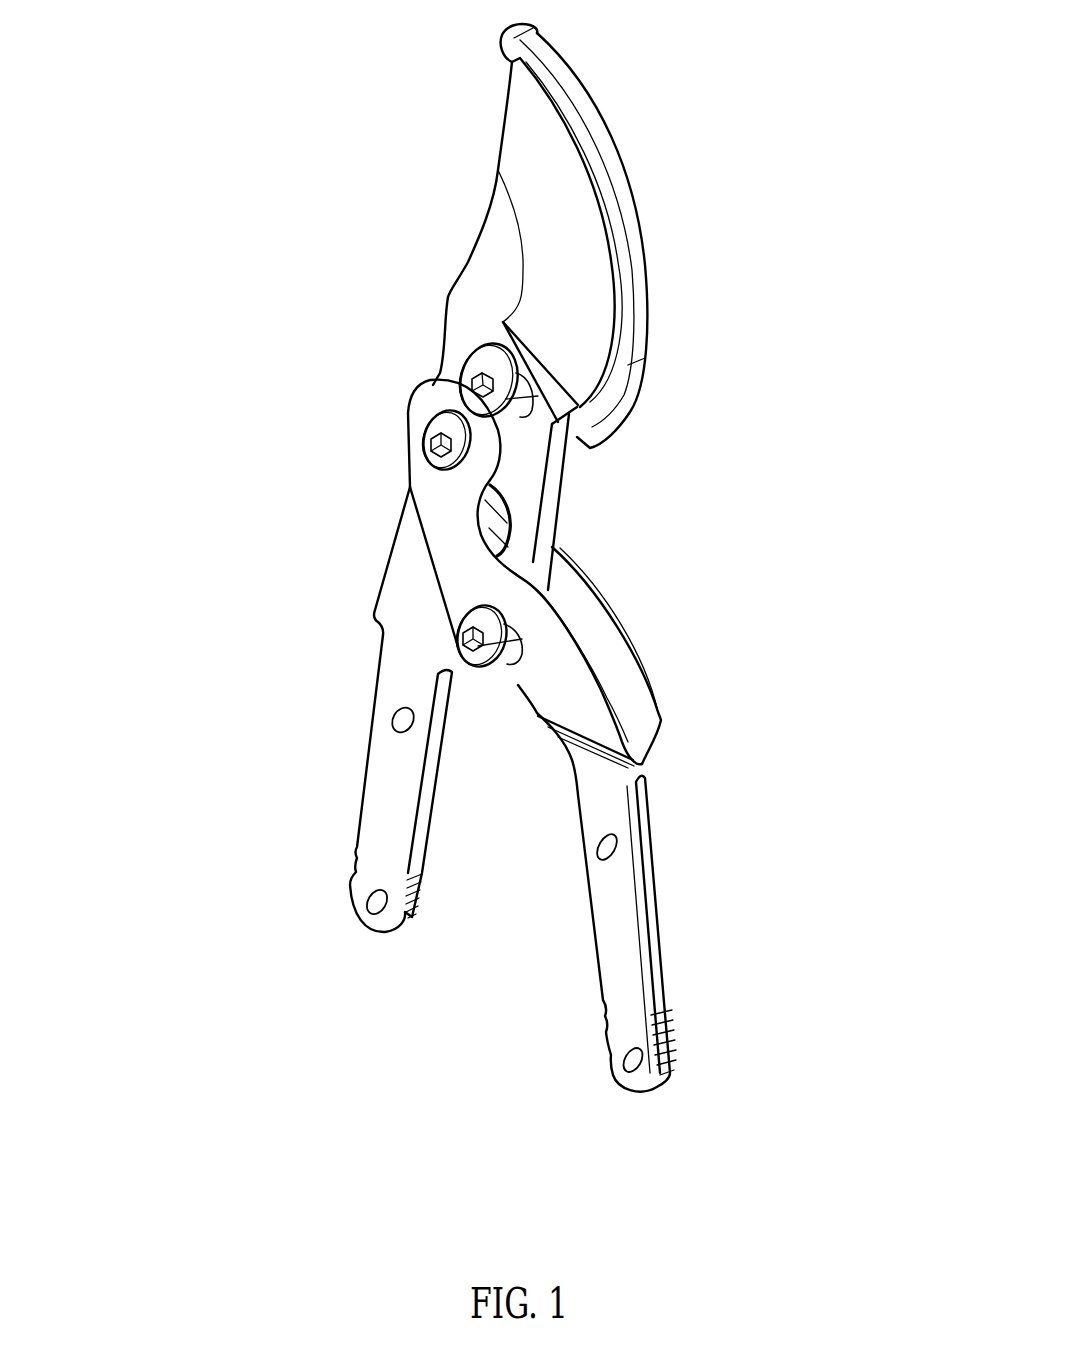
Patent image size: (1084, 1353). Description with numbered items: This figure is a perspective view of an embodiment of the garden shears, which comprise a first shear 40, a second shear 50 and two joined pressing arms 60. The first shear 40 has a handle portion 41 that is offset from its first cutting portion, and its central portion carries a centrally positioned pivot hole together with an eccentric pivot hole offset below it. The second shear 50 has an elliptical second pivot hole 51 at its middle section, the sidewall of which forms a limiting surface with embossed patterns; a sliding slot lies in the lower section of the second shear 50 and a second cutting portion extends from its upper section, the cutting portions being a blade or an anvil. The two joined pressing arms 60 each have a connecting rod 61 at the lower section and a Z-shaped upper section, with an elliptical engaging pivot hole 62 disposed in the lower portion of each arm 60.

The first shear 40 is at (680, 353).
The handle portion 41 is at (387, 805).
The second shear 50 is at (412, 247).
The second pivot hole 51 is at (458, 386).
The pressing arms 60 is at (660, 607).
The connecting rod 61 is at (620, 913).
The engaging pivot hole 62 is at (460, 647).